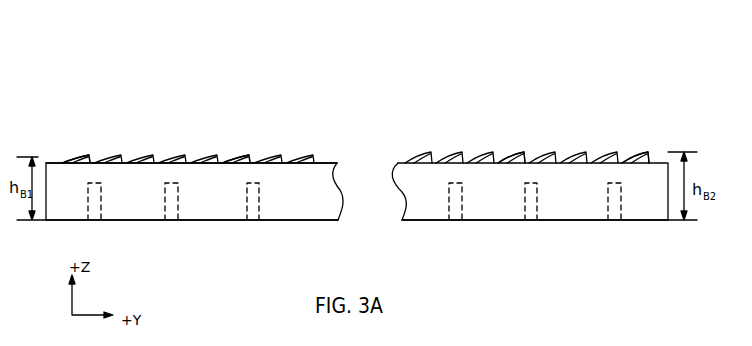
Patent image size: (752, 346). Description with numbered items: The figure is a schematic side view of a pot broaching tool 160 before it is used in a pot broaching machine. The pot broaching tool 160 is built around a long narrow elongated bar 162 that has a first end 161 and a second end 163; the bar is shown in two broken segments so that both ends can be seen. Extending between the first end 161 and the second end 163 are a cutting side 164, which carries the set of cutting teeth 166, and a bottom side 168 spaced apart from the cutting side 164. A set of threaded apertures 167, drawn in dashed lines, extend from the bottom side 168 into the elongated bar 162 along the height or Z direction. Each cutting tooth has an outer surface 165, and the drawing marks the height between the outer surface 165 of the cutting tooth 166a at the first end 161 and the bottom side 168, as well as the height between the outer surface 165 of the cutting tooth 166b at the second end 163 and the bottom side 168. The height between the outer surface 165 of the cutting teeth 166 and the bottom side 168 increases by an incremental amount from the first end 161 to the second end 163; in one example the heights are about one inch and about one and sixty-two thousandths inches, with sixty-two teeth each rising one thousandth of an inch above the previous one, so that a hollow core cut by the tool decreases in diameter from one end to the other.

The pot broaching tool 160 is at (470, 86).
The first end 161 is at (47, 194).
The elongated bar 162 is at (303, 224).
The second end 163 is at (668, 189).
The cutting side 164 is at (326, 160).
The outer surface 165 is at (66, 155).
The cutting teeth 166 is at (240, 154).
The cutting tooth at the first end 166a is at (72, 161).
The cutting tooth at the second end 166b is at (637, 154).
The threaded apertures 167 is at (172, 222).
The bottom side 168 is at (480, 221).